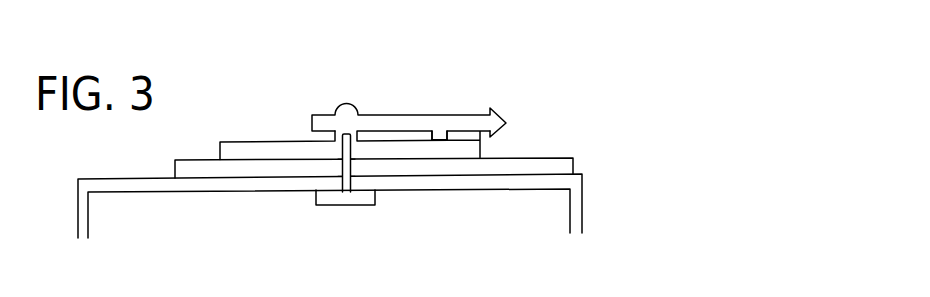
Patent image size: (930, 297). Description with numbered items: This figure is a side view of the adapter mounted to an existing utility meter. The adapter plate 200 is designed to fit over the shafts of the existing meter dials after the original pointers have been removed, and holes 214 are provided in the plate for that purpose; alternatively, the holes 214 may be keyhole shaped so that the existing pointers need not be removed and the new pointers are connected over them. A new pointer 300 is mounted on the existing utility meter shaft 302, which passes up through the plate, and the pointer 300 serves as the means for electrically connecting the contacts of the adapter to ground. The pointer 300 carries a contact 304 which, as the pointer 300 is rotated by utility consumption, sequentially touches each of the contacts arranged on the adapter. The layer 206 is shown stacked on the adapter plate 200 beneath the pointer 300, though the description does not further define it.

The adapter plate 200 is at (574, 159).
The upper layer 206 is at (482, 146).
The holes 214 is at (351, 163).
The pointer 300 is at (425, 115).
The utility meter shaft 302 is at (342, 164).
The contact 304 is at (443, 141).